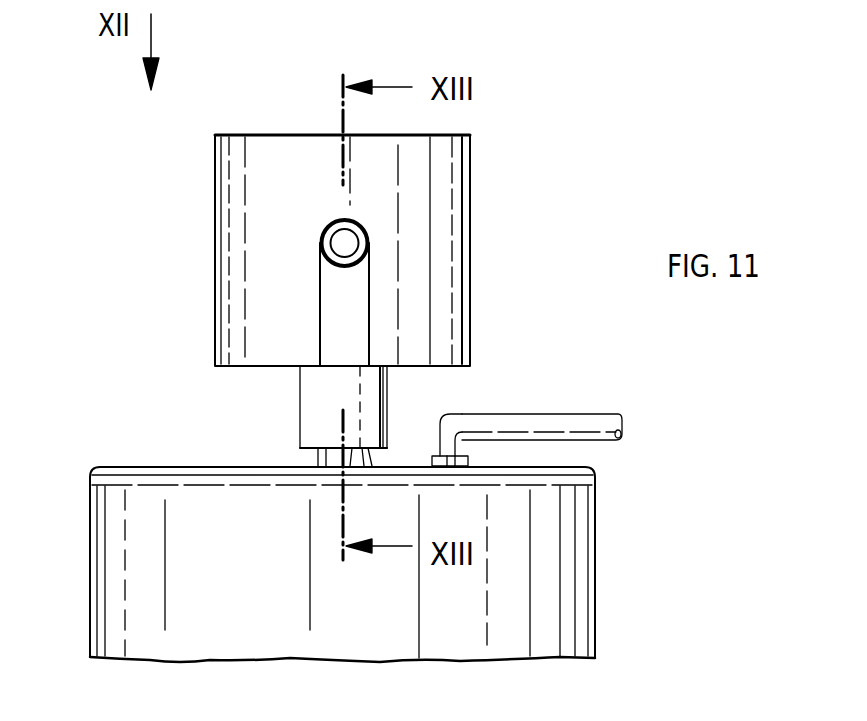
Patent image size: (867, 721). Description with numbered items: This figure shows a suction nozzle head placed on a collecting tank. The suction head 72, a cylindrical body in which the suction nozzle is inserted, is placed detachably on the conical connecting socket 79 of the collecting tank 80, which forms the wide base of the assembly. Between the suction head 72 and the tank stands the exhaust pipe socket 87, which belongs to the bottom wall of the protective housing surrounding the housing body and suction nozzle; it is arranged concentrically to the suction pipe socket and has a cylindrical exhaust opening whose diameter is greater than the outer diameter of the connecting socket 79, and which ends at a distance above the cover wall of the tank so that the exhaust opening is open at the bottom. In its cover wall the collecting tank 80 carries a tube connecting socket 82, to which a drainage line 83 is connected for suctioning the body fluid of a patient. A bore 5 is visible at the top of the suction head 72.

The pin bore 5 is at (325, 232).
The suction head 72 is at (458, 197).
The conical connecting socket 79 is at (318, 460).
The collecting tank 80 is at (108, 528).
The tube connecting socket 82 is at (448, 422).
The drainage line 83 is at (590, 430).
The exhaust pipe socket 87 is at (313, 384).